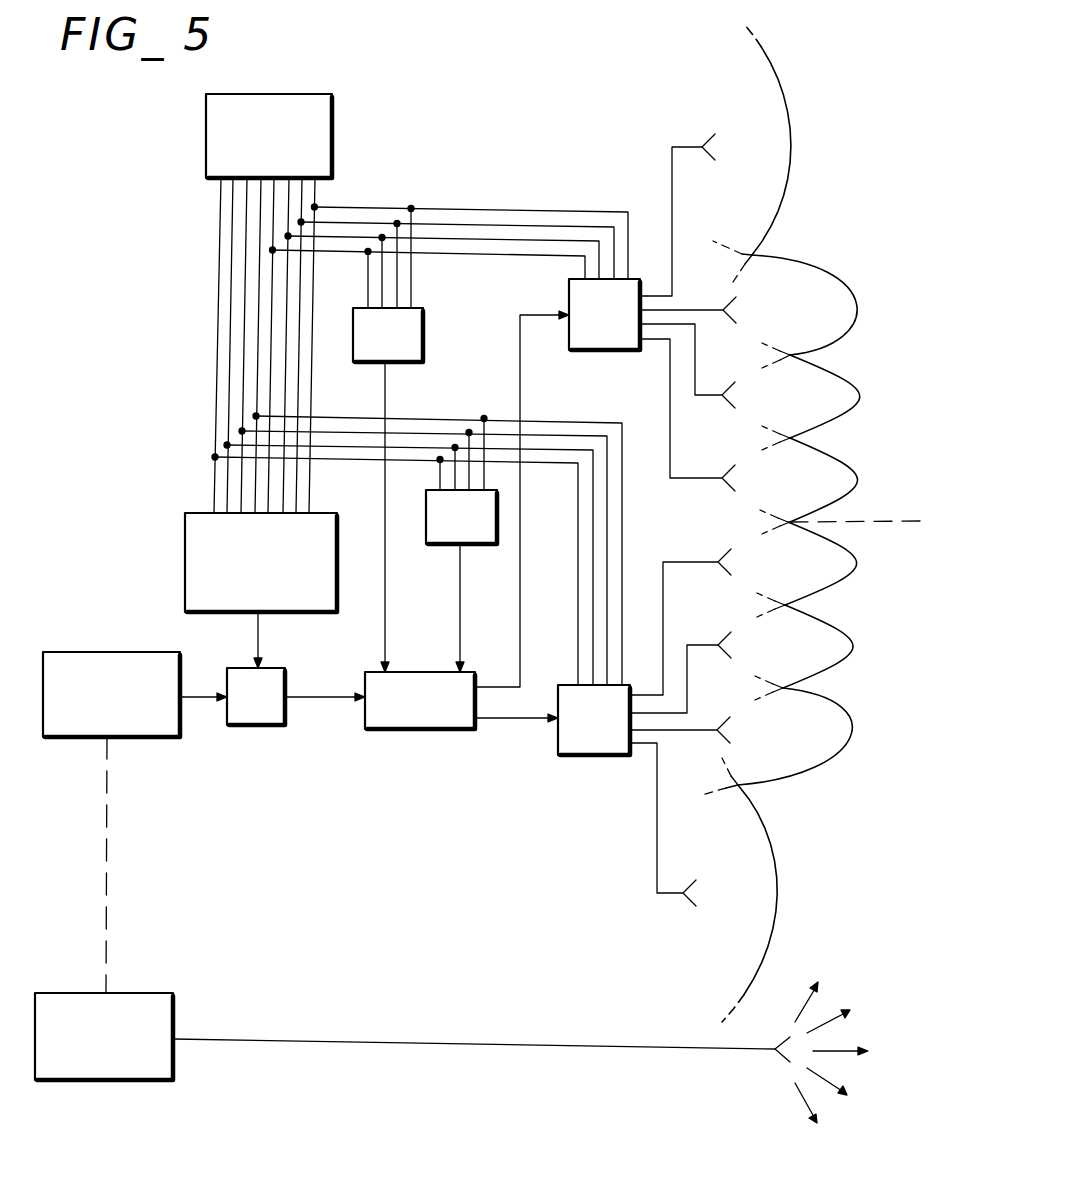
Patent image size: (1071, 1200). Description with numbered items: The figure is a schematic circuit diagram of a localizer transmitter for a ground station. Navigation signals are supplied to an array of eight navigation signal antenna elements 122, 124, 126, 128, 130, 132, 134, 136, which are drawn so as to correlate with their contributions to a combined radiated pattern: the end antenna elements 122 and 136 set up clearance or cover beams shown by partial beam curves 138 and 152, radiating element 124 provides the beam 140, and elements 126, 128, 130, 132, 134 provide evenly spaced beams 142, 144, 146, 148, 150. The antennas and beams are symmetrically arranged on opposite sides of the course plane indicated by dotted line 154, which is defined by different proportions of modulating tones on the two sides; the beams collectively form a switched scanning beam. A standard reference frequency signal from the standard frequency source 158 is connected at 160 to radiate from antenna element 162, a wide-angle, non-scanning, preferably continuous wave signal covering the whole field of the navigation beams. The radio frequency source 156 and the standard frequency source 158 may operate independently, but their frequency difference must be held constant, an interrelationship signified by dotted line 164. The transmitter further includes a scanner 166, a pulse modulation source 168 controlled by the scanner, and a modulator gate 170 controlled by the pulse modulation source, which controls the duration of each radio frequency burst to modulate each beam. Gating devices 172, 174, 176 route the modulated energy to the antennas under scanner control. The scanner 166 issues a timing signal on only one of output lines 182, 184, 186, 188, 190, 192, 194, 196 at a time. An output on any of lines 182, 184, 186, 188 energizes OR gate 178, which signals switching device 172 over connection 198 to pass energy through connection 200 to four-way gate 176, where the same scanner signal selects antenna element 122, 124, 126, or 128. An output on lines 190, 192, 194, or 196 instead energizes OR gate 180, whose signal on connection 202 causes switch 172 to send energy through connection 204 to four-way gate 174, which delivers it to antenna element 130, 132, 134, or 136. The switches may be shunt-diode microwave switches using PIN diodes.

The navigation signal antenna element 122 is at (708, 135).
The radiating element 124 is at (728, 306).
The antenna element 126 is at (735, 390).
The antenna element 128 is at (730, 472).
The antenna element 130 is at (730, 557).
The antenna element 132 is at (730, 640).
The antenna element 134 is at (730, 724).
The navigation signal antenna element 136 is at (694, 902).
The partial beam curve 138 is at (797, 130).
The beam of radiation 140 is at (825, 280).
The beam curve 142 is at (825, 378).
The beam curve 144 is at (825, 462).
The beam curve 146 is at (844, 540).
The beam curve 148 is at (833, 625).
The beam curve 150 is at (830, 710).
The partial beam curve 152 is at (780, 842).
The course plane 154 is at (865, 521).
The radio frequency source 156 is at (98, 652).
The standard frequency source 158 is at (154, 993).
The connection 160 is at (343, 1041).
The antenna element 162 is at (780, 1062).
The dotted line 164 is at (108, 918).
The scanner 166 is at (205, 165).
The pulse modulation source 168 is at (185, 530).
The modulator gate 170 is at (270, 726).
The switching device 172 is at (427, 730).
The four-way gate 174 is at (587, 757).
The four-way gate 176 is at (569, 290).
The OR gate 178 is at (424, 350).
The OR gate 180 is at (478, 546).
The scanner output line 182 is at (318, 206).
The scanner output line 184 is at (303, 273).
The scanner output line 186 is at (286, 374).
The scanner output line 188 is at (272, 399).
The scanner output line 190 is at (260, 272).
The scanner output line 192 is at (246, 298).
The scanner output line 194 is at (232, 328).
The scanner output line 196 is at (220, 358).
The connection 198 is at (385, 487).
The connection 200 is at (520, 650).
The connection 202 is at (460, 612).
The connection 204 is at (530, 719).